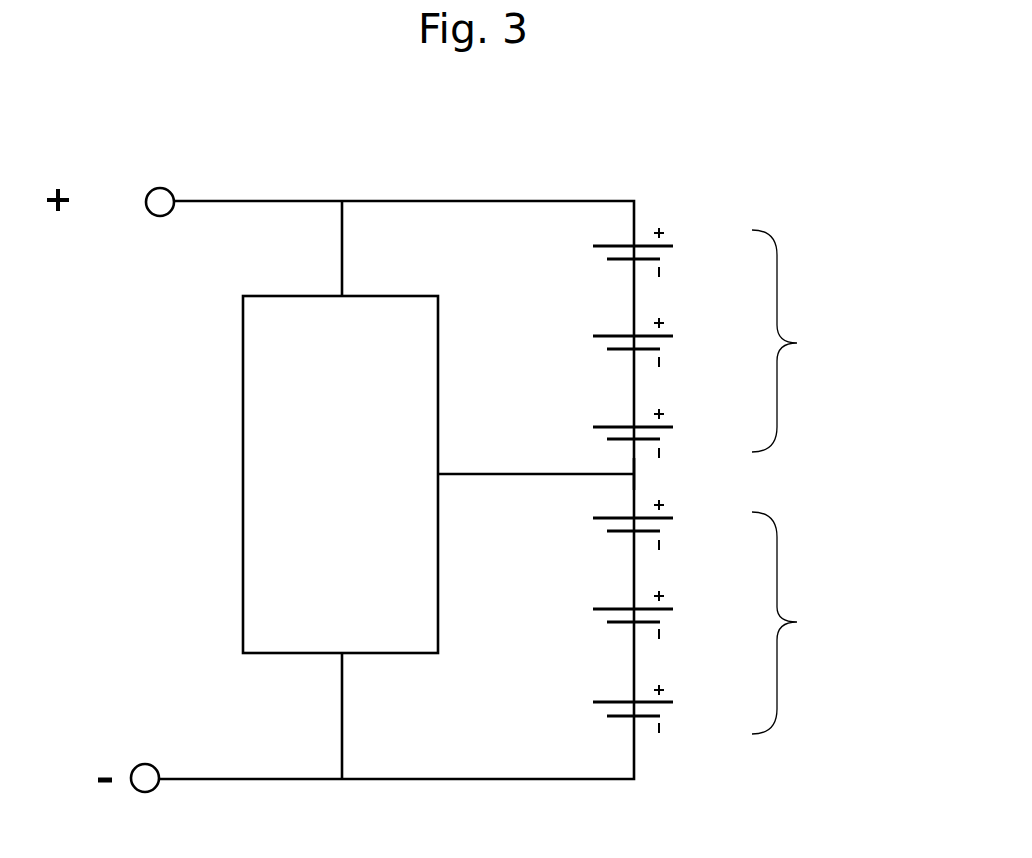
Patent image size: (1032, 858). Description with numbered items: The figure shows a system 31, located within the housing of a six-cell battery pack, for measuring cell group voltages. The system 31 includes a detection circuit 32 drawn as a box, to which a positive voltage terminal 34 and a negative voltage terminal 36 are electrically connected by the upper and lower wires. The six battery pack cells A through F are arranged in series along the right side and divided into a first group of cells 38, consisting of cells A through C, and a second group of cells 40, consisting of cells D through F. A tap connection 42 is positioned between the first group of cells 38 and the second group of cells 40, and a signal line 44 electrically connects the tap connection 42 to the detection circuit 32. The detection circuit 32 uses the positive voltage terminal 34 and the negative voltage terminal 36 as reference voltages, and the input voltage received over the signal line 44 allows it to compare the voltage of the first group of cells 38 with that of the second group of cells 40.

The system 31 is at (753, 74).
The detection circuit 32 is at (231, 441).
The positive voltage terminal 34 is at (222, 188).
The negative voltage terminal 36 is at (208, 764).
The first group of cells 38 is at (811, 332).
The second group of cells 40 is at (811, 612).
The tap connection 42 is at (651, 473).
The signal line 44 is at (552, 460).